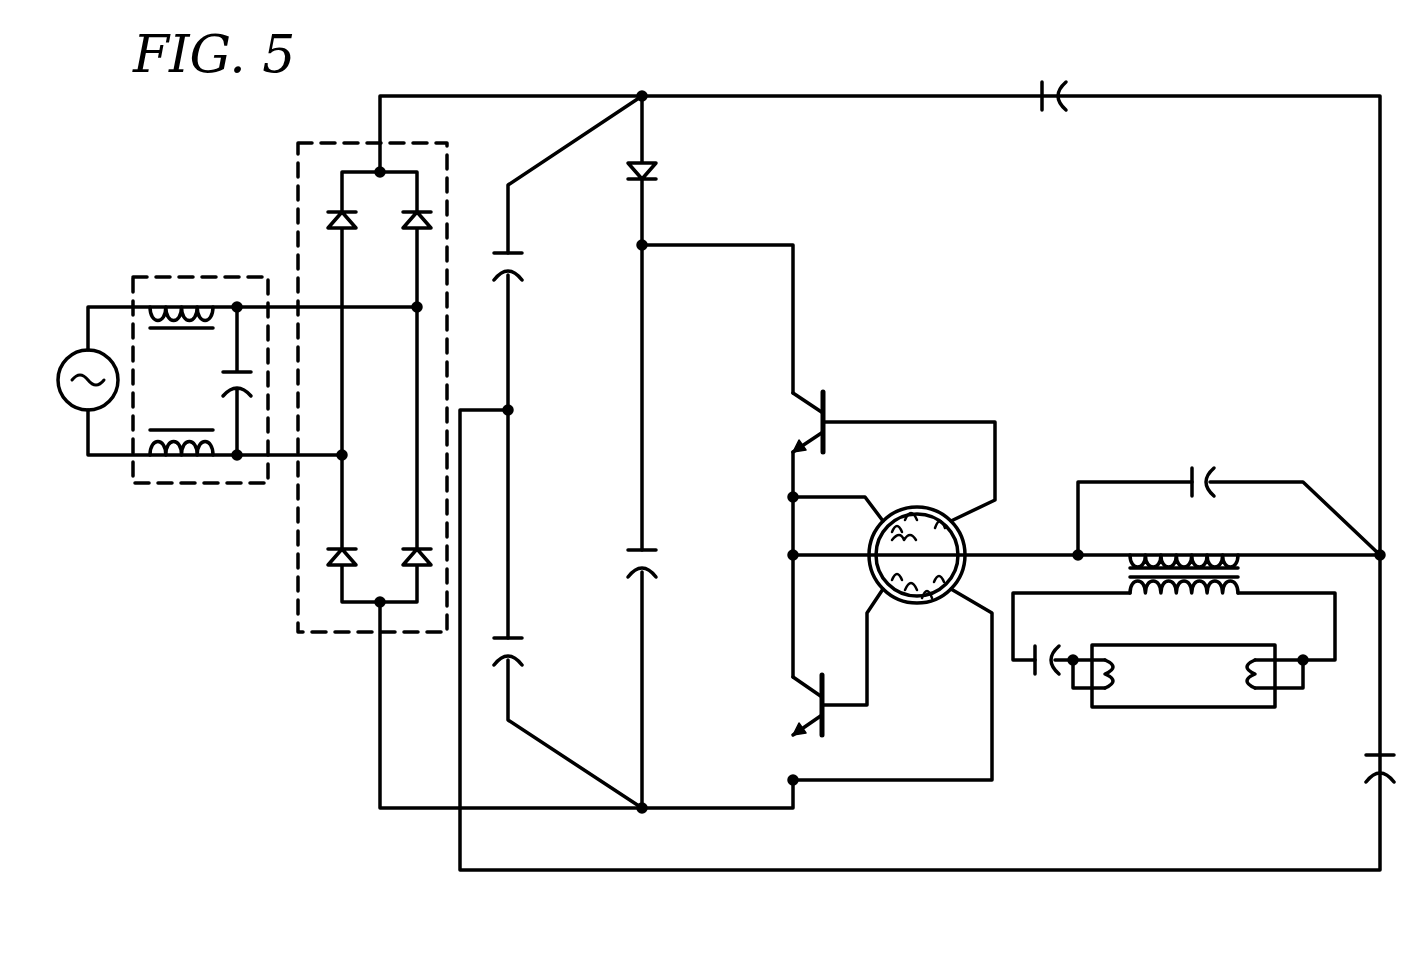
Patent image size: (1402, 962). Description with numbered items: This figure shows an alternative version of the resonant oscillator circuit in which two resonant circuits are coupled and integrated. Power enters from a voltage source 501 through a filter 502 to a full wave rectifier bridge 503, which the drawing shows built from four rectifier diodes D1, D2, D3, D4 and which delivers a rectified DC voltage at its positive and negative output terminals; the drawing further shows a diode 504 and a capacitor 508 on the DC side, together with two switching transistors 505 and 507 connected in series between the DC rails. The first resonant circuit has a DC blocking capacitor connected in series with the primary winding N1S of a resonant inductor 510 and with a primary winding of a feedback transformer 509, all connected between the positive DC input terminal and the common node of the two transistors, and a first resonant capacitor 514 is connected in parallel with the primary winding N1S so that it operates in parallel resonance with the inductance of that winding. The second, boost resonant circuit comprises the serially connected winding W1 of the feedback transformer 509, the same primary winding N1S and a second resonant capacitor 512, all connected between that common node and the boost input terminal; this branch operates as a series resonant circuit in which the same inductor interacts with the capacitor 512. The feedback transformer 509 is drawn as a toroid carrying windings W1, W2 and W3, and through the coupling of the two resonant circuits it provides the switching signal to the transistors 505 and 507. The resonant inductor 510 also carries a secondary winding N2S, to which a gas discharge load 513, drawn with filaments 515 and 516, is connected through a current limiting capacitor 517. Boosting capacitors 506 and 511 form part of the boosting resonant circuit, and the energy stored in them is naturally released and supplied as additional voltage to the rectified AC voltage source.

The AC power source 501 is at (68, 362).
The EMI filter 502 is at (132, 277).
The full-wave rectifier bridge 503 is at (345, 376).
The diode 504 is at (654, 172).
The upper switching transistor 505 is at (810, 445).
The boosting capacitor 506 is at (520, 264).
The lower switching transistor 507 is at (804, 738).
The capacitor 508 is at (654, 559).
The feedback transformer 509 is at (899, 552).
The resonant inductor 510 is at (1236, 578).
The boosting capacitor 511 is at (522, 647).
The second resonant capacitor 512 is at (1362, 758).
The gas discharge load 513 is at (1188, 698).
The capacitor 514 is at (1200, 470).
The lamp filament 515 is at (1112, 666).
The lamp filament 516 is at (1246, 688).
The current limiting capacitor 517 is at (1048, 676).
The bridge diode D1 is at (340, 233).
The bridge diode D2 is at (404, 220).
The bridge diode D3 is at (332, 557).
The bridge diode D4 is at (406, 557).
The winding of feedback transformer W1 is at (916, 545).
The drive transformer winding W2 is at (920, 514).
The drive transformer winding W3 is at (938, 602).
The primary winding of resonant inductor N1S is at (1160, 562).
The secondary winding of resonant inductor N2S is at (1152, 596).